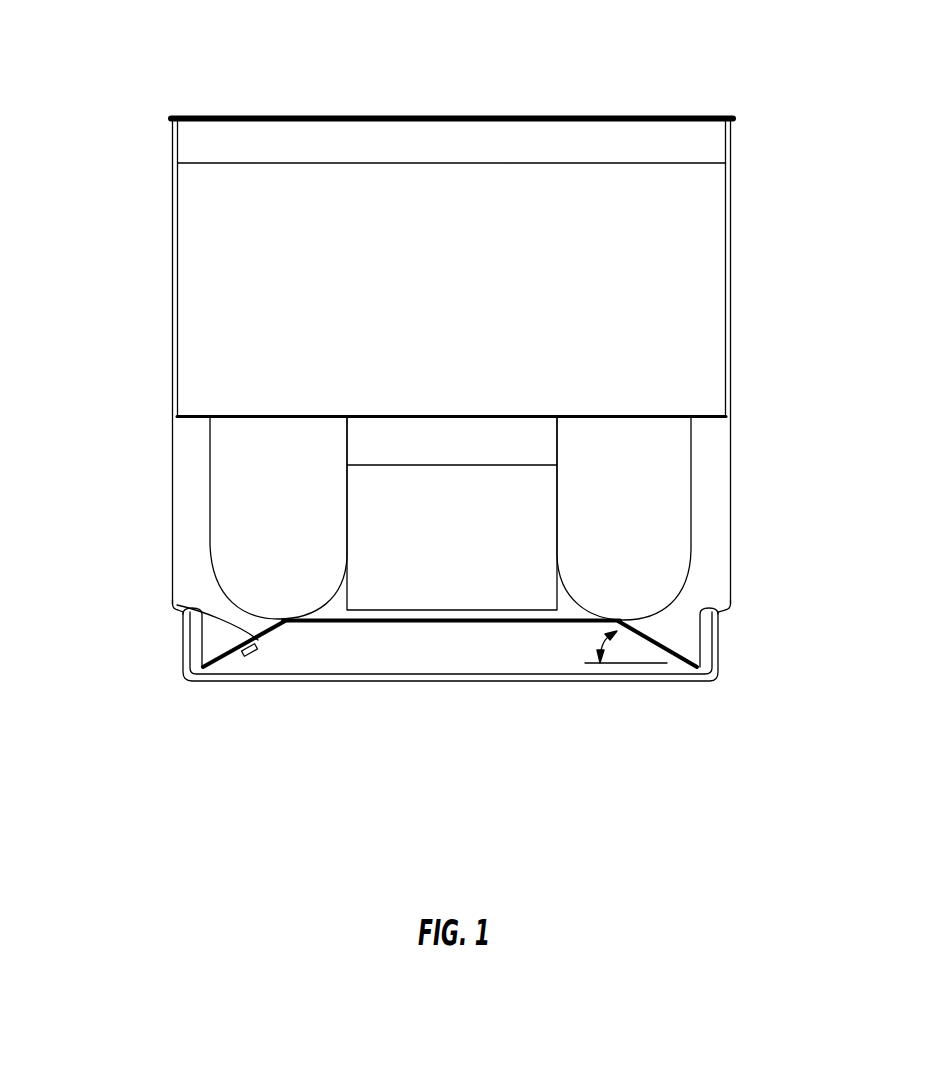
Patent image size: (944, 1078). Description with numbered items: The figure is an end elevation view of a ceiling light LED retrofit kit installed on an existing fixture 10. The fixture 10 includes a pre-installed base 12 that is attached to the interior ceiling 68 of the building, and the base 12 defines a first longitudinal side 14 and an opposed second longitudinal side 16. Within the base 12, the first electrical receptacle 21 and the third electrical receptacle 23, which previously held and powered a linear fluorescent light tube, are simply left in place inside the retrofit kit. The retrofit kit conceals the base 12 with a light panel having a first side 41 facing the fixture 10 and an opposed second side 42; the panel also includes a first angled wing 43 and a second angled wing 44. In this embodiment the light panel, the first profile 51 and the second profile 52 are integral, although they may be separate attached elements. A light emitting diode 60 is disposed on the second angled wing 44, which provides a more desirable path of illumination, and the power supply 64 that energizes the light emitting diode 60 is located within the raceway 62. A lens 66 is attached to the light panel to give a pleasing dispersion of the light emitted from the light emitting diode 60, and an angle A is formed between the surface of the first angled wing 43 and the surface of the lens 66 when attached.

The fixture 10 is at (161, 141).
The base 12 is at (700, 198).
The first longitudinal side 14 is at (720, 278).
The second longitudinal side 16 is at (183, 240).
The first electrical receptacle 21 is at (663, 492).
The third electrical receptacle 23 is at (238, 440).
The first side 41 is at (575, 618).
The second side 42 is at (333, 622).
The first angled wing 43 is at (658, 657).
The second angled wing 44 is at (175, 603).
The first profile 51 is at (730, 372).
The second profile 52 is at (173, 333).
The light emitting diode 60 is at (248, 653).
The raceway 62 is at (520, 433).
The power supply 64 is at (380, 497).
The lens 66 is at (518, 682).
The ceiling 68 is at (497, 115).
The angle A is at (597, 664).